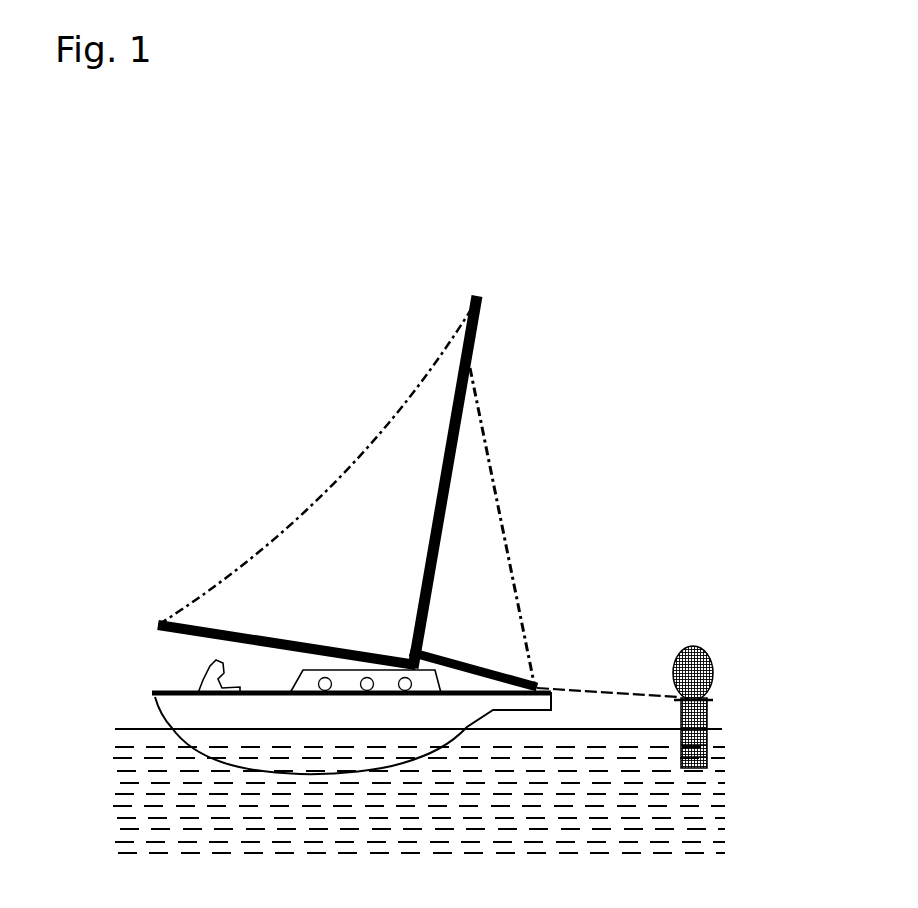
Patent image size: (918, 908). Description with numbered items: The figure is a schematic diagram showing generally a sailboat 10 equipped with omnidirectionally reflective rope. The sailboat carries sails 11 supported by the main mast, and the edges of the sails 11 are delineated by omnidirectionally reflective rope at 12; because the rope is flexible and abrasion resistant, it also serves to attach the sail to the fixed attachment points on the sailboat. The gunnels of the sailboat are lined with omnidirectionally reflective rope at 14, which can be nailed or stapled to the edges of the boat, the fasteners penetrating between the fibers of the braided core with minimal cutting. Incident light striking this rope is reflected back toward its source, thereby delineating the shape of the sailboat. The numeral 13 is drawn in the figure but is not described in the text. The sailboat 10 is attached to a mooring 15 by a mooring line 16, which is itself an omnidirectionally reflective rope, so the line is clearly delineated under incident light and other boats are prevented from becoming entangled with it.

The sailboat 10 is at (566, 283).
The sails 11 is at (382, 482).
The omnidirectionally reflective rope delineating sail edges 12 is at (300, 508).
The hull 13 is at (155, 697).
The omnidirectionally reflective rope lining gunnels 14 is at (270, 695).
The mooring 15 is at (702, 648).
The mooring line 16 is at (568, 692).